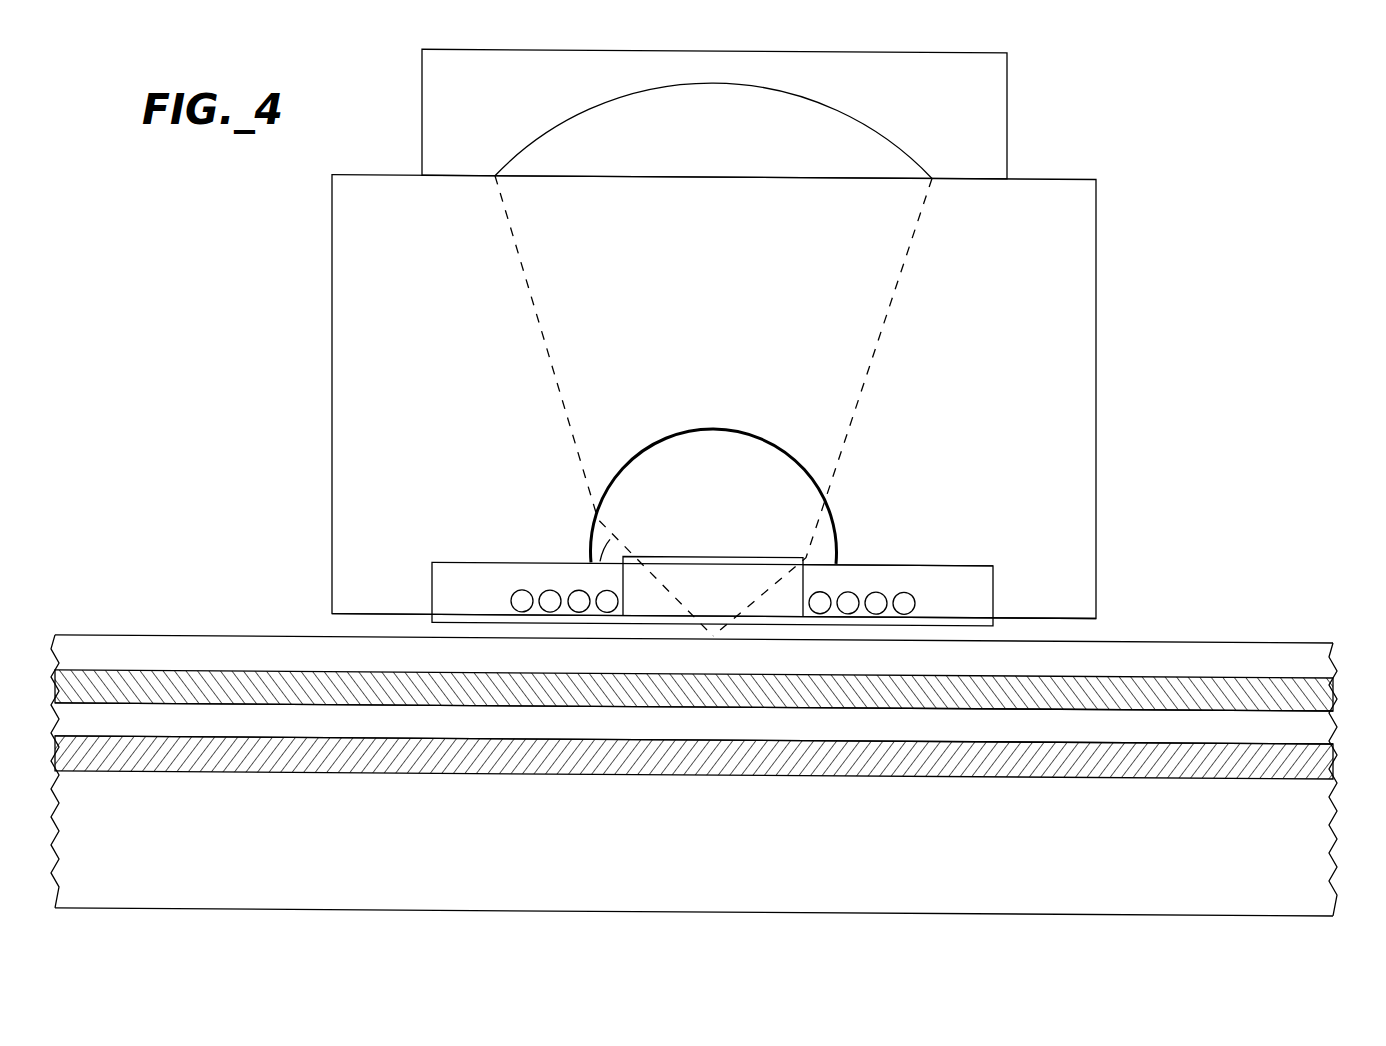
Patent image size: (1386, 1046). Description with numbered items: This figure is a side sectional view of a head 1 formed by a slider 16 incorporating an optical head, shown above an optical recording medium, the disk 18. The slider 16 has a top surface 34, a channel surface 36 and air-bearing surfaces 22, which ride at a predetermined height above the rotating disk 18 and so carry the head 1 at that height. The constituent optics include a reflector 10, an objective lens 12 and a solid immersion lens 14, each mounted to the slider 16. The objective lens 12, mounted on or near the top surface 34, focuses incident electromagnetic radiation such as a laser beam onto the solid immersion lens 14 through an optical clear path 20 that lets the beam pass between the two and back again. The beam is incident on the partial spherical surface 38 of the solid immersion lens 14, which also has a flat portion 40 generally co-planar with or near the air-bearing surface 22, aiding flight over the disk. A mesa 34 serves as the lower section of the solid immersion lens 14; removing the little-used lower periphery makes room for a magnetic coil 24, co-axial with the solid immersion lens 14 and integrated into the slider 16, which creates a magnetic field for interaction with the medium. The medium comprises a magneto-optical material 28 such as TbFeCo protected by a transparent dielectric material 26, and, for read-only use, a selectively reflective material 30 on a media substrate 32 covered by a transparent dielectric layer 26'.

The head 1 is at (730, 345).
The reflector 10 is at (1007, 108).
The objective lens 12 is at (663, 92).
The solid immersion lens 14 is at (714, 485).
The slider 16 is at (942, 401).
The disk 18 is at (710, 756).
The optical clear path 20 is at (703, 323).
The air-bearing surfaces 22 is at (1027, 616).
The magnetic coil 24 is at (712, 576).
The transparent dielectric material 26 is at (694, 655).
The transparent dielectric layer 26' is at (694, 724).
The magneto-optical material 28 is at (703, 704).
The selectively reflective material 30 is at (699, 774).
The media substrate 32 is at (699, 871).
The top surface 34 is at (1028, 177).
The channel surface 36 is at (898, 564).
The partial spherical surface 38 is at (757, 440).
The flat portion 40 is at (607, 558).